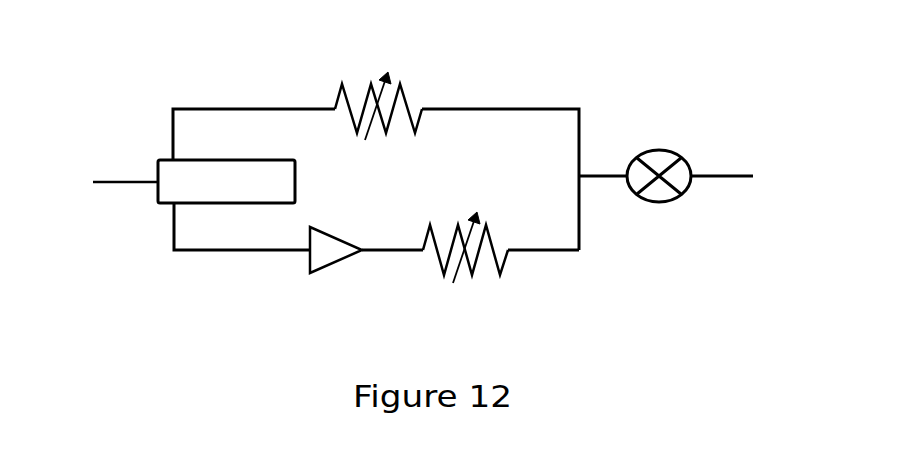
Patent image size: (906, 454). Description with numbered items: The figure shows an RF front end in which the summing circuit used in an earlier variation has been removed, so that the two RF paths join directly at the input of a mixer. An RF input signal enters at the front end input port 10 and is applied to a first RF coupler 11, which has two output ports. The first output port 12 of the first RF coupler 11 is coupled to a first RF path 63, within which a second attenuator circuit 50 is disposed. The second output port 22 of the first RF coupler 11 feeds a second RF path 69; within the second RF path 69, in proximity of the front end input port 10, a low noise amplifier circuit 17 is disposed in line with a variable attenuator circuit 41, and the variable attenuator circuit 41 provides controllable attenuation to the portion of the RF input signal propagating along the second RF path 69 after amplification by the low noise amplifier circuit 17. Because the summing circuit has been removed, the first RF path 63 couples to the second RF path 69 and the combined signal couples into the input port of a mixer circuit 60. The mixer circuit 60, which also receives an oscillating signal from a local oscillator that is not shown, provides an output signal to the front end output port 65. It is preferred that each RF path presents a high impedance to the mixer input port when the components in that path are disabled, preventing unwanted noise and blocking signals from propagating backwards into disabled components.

The front end input port 10 is at (108, 183).
The first RF coupler 11 is at (157, 188).
The first output port 12 is at (173, 130).
The low noise amplifier circuit 17 is at (333, 272).
The second output port 22 is at (182, 204).
The variable attenuator circuit 41 is at (477, 265).
The second attenuator circuit 50 is at (385, 122).
The mixer circuit 60 is at (677, 198).
The first RF path 63 is at (280, 109).
The front end output port 65 is at (722, 176).
The second RF path 69 is at (377, 253).